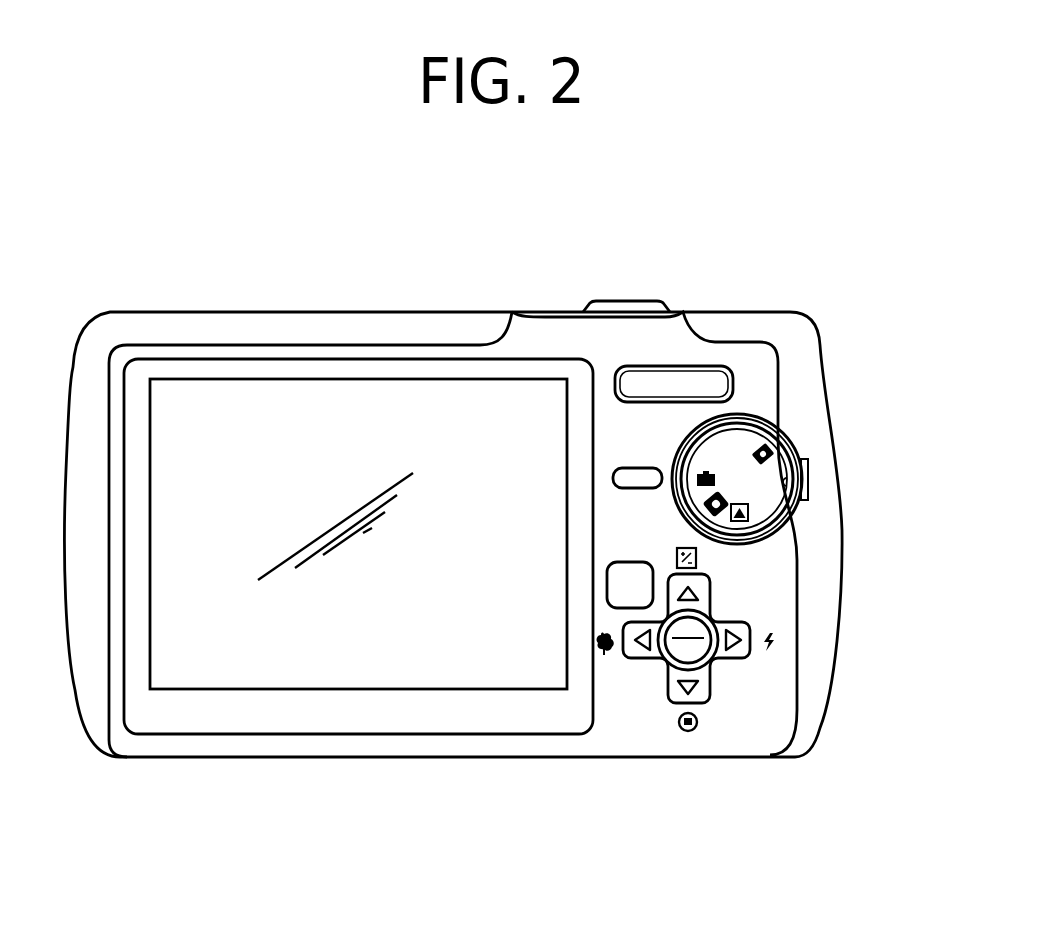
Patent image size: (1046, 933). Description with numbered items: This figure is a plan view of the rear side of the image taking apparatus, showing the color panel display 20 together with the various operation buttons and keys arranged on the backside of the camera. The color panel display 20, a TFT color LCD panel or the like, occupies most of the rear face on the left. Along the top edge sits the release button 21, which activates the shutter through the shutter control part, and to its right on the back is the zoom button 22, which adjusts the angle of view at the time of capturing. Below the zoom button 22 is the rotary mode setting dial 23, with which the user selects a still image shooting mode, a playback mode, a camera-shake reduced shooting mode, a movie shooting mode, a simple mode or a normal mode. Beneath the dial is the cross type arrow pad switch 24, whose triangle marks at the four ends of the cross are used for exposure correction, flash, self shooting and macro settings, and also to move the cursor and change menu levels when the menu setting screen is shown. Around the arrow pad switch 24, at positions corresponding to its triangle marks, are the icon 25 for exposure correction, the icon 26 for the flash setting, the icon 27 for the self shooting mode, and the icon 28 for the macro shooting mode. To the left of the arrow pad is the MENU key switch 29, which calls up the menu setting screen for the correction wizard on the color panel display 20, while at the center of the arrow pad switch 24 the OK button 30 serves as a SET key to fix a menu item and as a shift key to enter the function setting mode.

The color panel display 20 is at (356, 405).
The release button 21 is at (632, 302).
The zoom button 22 is at (718, 362).
The rotary mode setting dial 23 is at (803, 461).
The cross type arrow pad switch 24 is at (662, 663).
The icon 25 is at (696, 557).
The icon 26 is at (770, 637).
The icon 27 is at (688, 731).
The icon 28 is at (605, 652).
The MENU key switch 29 is at (607, 598).
The OK button 30 is at (703, 653).